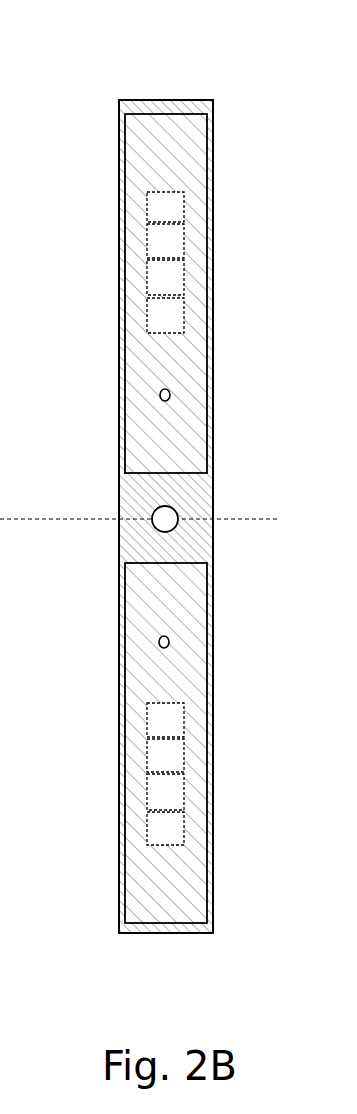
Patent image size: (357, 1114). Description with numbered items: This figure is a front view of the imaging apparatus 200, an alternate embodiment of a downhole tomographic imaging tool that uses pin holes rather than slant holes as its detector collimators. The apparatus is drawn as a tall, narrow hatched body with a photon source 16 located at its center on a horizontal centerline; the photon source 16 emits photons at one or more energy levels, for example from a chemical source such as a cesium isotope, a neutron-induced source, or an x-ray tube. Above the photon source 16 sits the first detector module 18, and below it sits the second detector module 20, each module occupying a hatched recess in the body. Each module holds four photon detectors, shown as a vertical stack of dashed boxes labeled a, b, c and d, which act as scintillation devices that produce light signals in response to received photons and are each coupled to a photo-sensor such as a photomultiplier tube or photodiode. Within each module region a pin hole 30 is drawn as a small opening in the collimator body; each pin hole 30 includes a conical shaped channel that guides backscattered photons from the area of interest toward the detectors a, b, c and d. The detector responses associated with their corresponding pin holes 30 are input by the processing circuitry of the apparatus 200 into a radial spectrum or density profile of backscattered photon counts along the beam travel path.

The imaging apparatus 200 is at (168, 100).
The photon source 16 is at (176, 511).
The first detector module 18 is at (178, 513).
The second detector module 20 is at (222, 703).
The pin hole 30 is at (161, 390).
The detector a is at (147, 206).
The detector b is at (147, 243).
The detector c is at (147, 280).
The detector d is at (147, 318).